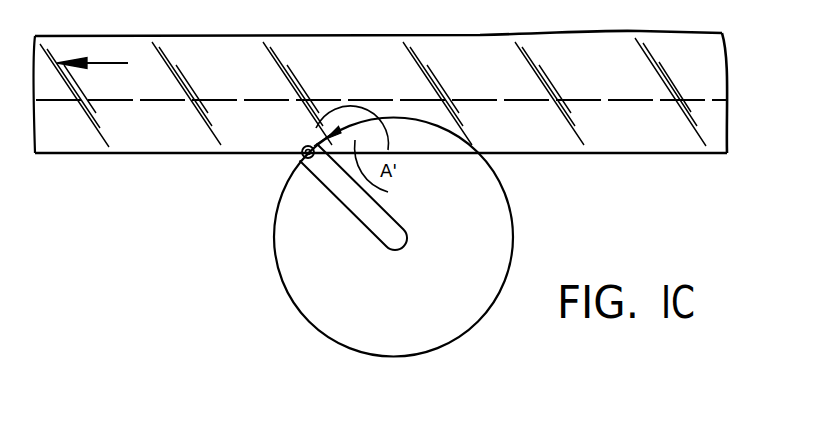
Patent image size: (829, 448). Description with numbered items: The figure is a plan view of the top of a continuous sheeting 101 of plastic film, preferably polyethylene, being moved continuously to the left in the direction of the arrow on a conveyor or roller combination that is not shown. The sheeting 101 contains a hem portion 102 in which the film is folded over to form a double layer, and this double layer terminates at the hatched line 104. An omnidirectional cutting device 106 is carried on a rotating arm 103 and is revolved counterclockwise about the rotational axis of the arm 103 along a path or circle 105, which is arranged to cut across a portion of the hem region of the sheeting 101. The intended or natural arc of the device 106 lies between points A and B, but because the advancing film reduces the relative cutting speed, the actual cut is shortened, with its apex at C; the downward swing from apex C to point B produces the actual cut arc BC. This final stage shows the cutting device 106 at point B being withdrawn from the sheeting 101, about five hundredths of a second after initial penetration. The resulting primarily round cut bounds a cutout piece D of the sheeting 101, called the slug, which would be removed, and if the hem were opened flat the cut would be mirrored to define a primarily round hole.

The sheeting 101 is at (497, 73).
The hem portion 102 is at (130, 136).
The arm 103 is at (364, 213).
The hatched line 104 is at (149, 99).
The path or circle 105 is at (512, 223).
The omnidirectional cutting device 106 is at (307, 159).
The point A is at (487, 143).
The point B is at (285, 143).
The apex C is at (351, 120).
The cutout piece D is at (380, 173).